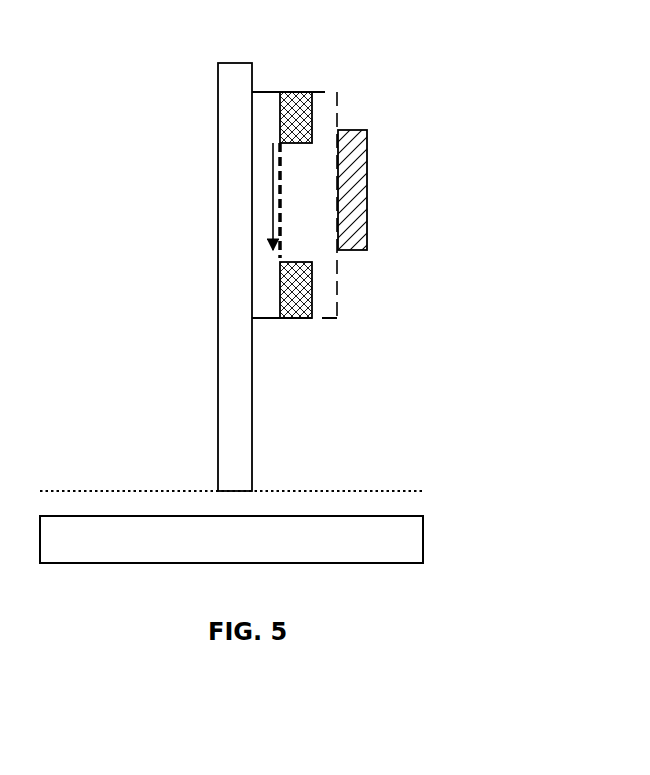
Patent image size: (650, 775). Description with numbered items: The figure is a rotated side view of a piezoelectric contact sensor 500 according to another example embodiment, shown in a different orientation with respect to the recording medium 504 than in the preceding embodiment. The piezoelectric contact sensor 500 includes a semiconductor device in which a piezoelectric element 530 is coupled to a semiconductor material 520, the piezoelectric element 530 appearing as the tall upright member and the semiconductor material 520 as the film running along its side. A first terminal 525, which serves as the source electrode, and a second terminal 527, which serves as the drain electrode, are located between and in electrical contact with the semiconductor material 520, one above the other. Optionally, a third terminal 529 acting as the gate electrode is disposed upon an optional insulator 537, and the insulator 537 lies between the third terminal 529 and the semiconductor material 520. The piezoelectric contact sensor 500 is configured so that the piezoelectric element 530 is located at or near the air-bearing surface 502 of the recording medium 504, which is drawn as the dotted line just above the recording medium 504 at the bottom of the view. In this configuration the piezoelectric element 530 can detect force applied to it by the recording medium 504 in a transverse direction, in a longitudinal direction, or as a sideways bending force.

The piezoelectric contact sensor 500 is at (381, 72).
The air-bearing surface 502 is at (360, 491).
The recording medium 504 is at (417, 545).
The semiconductor material 520 is at (262, 217).
The first terminal (source electrode) 525 is at (303, 105).
The second terminal (drain electrode) 527 is at (297, 293).
The third terminal (gate electrode) 529 is at (360, 205).
The piezoelectric element 530 is at (233, 163).
The insulator 537 is at (302, 220).